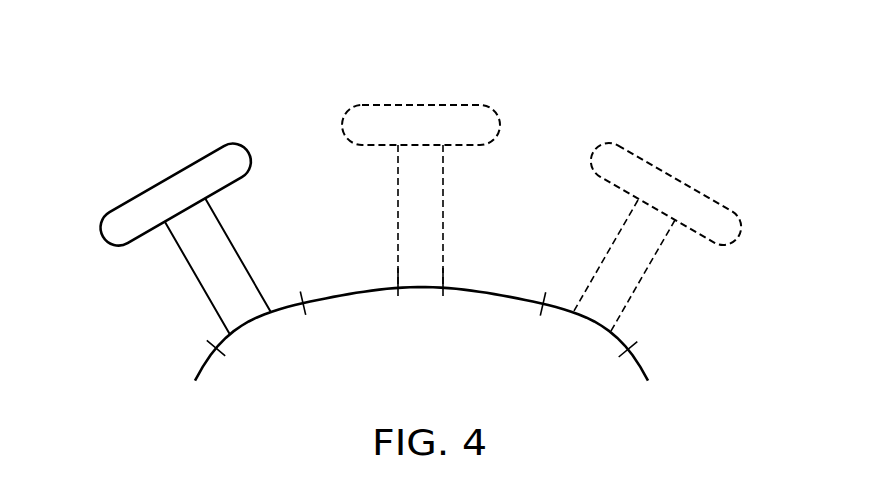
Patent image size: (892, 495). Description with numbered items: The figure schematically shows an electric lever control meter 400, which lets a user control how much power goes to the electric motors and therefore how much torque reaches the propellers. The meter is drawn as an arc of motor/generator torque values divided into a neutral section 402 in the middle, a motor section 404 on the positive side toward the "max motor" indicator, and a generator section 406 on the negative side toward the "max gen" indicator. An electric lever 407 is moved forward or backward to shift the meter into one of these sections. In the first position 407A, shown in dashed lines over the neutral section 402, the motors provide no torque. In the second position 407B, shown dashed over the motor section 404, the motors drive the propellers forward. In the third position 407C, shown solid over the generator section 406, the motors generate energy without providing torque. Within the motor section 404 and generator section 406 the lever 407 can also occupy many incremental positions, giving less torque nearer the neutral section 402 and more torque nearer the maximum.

The electric lever control meter 400 is at (605, 118).
The neutral section 402 is at (388, 243).
The motor section 404 is at (555, 280).
The generator section 406 is at (285, 277).
The electric lever 407 is at (163, 255).
The first position 407A is at (423, 104).
The second position 407B is at (678, 173).
The third position 407C is at (163, 172).